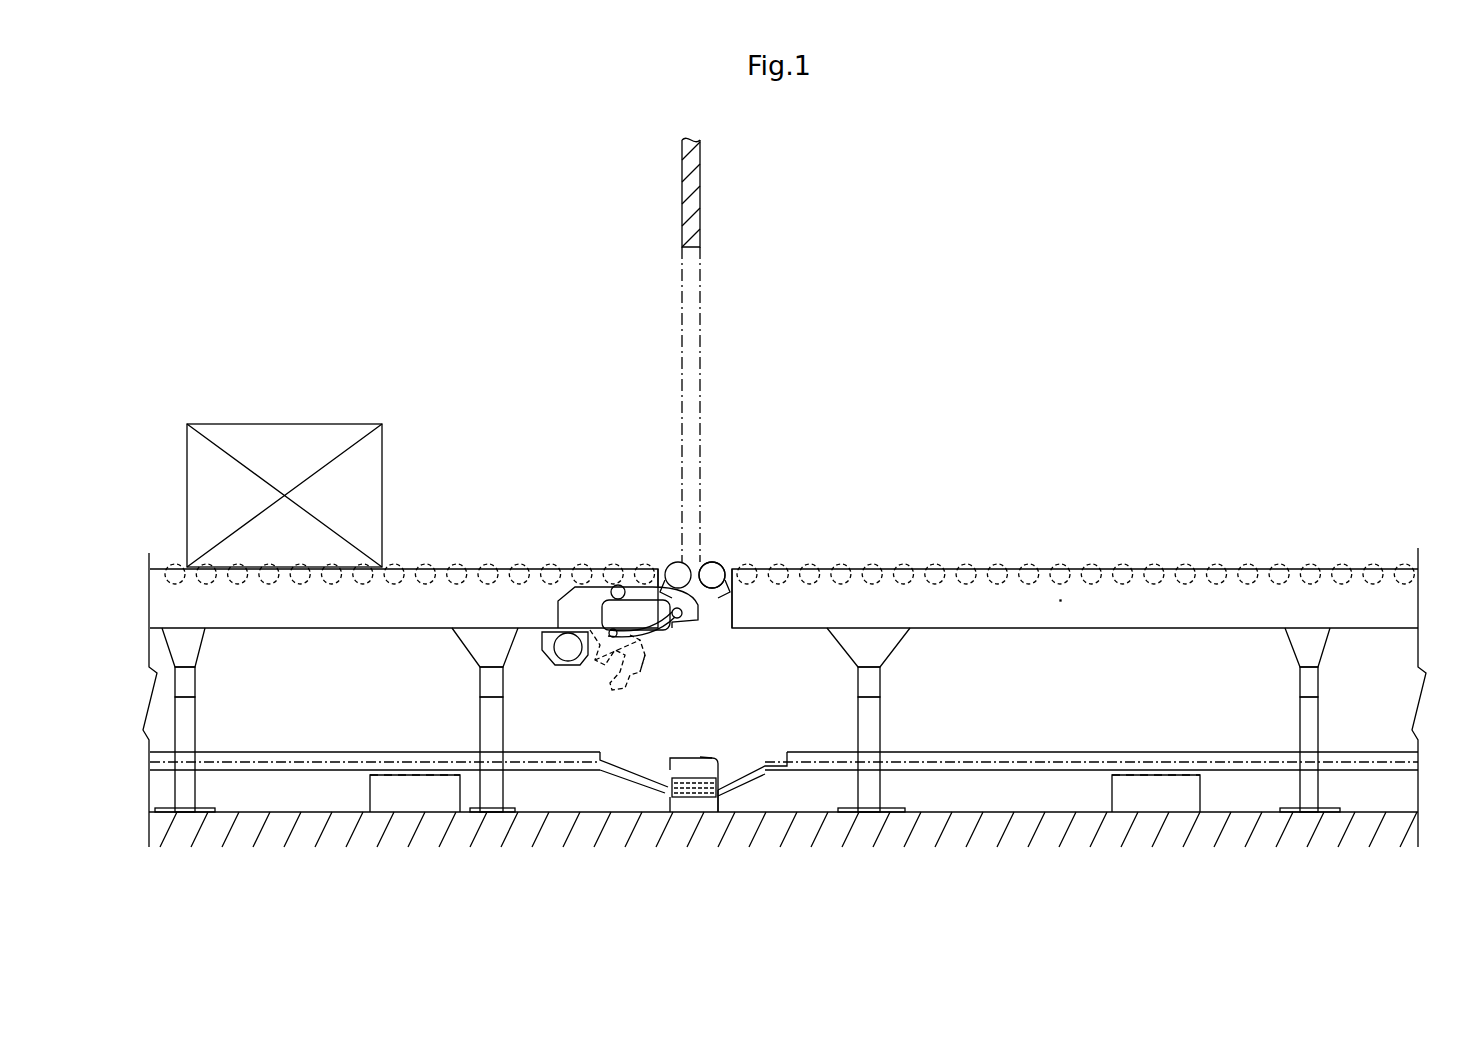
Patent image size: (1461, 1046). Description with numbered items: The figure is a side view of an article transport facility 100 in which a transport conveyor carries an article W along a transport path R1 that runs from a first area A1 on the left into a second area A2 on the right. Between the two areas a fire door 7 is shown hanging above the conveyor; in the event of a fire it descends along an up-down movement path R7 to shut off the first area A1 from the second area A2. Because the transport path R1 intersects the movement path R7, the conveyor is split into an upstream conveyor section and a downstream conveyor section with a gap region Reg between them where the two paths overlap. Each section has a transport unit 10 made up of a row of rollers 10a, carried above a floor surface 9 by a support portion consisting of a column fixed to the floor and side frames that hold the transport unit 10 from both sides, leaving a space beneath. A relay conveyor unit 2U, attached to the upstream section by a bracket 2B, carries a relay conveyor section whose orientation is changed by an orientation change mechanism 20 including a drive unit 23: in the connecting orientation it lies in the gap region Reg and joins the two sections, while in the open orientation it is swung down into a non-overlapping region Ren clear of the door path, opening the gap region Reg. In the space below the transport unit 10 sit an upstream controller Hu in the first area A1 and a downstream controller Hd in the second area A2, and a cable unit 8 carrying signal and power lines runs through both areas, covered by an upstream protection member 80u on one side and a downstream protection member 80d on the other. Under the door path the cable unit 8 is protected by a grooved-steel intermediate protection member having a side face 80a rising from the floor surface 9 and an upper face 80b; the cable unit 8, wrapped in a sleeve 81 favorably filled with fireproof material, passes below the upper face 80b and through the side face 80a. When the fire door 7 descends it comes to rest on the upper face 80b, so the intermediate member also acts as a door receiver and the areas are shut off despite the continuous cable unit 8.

The article transport facility 100 is at (1293, 216).
The fire door 7 is at (700, 203).
The movement path R7 is at (700, 377).
The first area A1 is at (407, 265).
The second area A2 is at (1105, 311).
The article W is at (285, 424).
The transport path R1 is at (552, 475).
The transport unit 10 is at (410, 545).
The rollers 10a is at (545, 568).
The relay conveyor unit 2U is at (613, 560).
The bracket 2B is at (556, 600).
The drive unit 23 is at (548, 668).
The orientation change mechanism 20 is at (585, 675).
The non-overlapping region Ren is at (650, 703).
The gap region Reg is at (722, 628).
The upstream protection member 80u is at (400, 752).
The downstream protection member 80d is at (918, 752).
The upper face 80b is at (700, 757).
The side face 80a is at (720, 797).
The cable unit 8 is at (760, 760).
The sleeve 81 is at (668, 790).
The floor surface 9 is at (995, 811).
The upstream controller Hu is at (368, 782).
The downstream controller Hd is at (1200, 790).